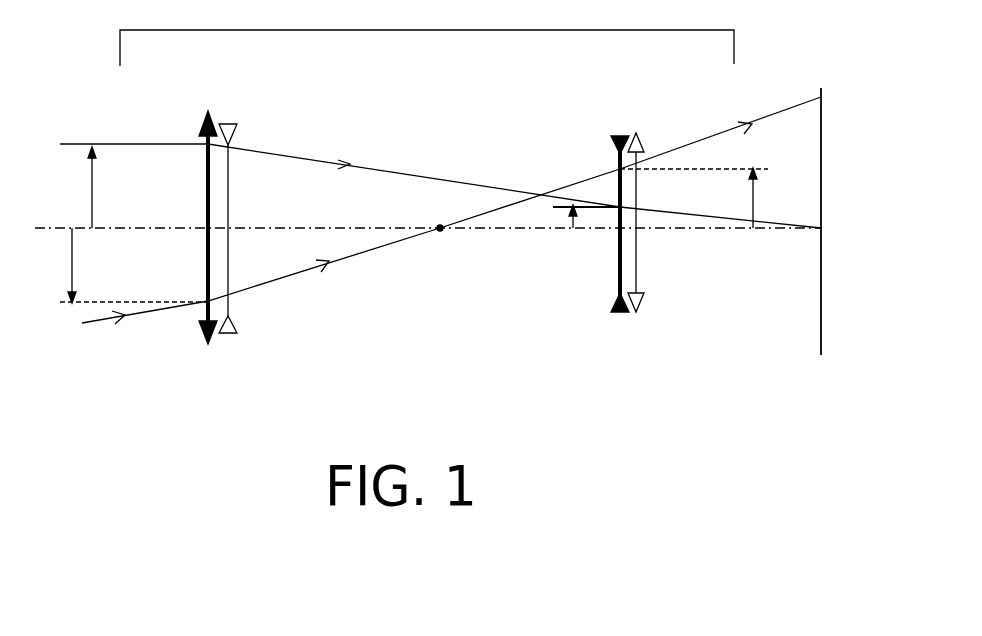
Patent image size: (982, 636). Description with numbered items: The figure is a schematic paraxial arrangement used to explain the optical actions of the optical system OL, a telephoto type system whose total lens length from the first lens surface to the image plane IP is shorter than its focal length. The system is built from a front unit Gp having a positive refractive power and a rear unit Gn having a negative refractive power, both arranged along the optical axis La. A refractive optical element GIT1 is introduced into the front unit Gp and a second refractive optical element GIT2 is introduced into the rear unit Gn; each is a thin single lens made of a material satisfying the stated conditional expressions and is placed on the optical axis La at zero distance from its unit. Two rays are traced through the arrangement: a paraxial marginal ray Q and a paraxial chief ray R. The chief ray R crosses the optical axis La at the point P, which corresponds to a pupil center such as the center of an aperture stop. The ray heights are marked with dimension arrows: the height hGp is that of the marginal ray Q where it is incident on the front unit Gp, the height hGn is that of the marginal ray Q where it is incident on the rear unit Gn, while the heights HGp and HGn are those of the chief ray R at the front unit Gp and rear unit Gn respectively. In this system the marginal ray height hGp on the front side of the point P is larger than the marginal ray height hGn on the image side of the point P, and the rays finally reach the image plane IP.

The optical system OL is at (427, 34).
The front unit Gp is at (203, 116).
The refractive optical element GIT1 is at (233, 120).
The rear unit Gn is at (613, 134).
The refractive optical element GIT2 is at (672, 107).
The image plane IP is at (822, 105).
The paraxial marginal ray Q is at (427, 180).
The paraxial chief ray R is at (440, 229).
The crossing point P is at (438, 249).
The optical axis La is at (490, 229).
The height of the paraxial marginal ray incident on the front unit hGp is at (70, 187).
The height of the paraxial chief ray incident on the front unit HGp is at (115, 265).
The height of the paraxial marginal ray incident on the rear unit hGn is at (577, 242).
The height of the paraxial chief ray incident on the rear unit HGn is at (706, 198).